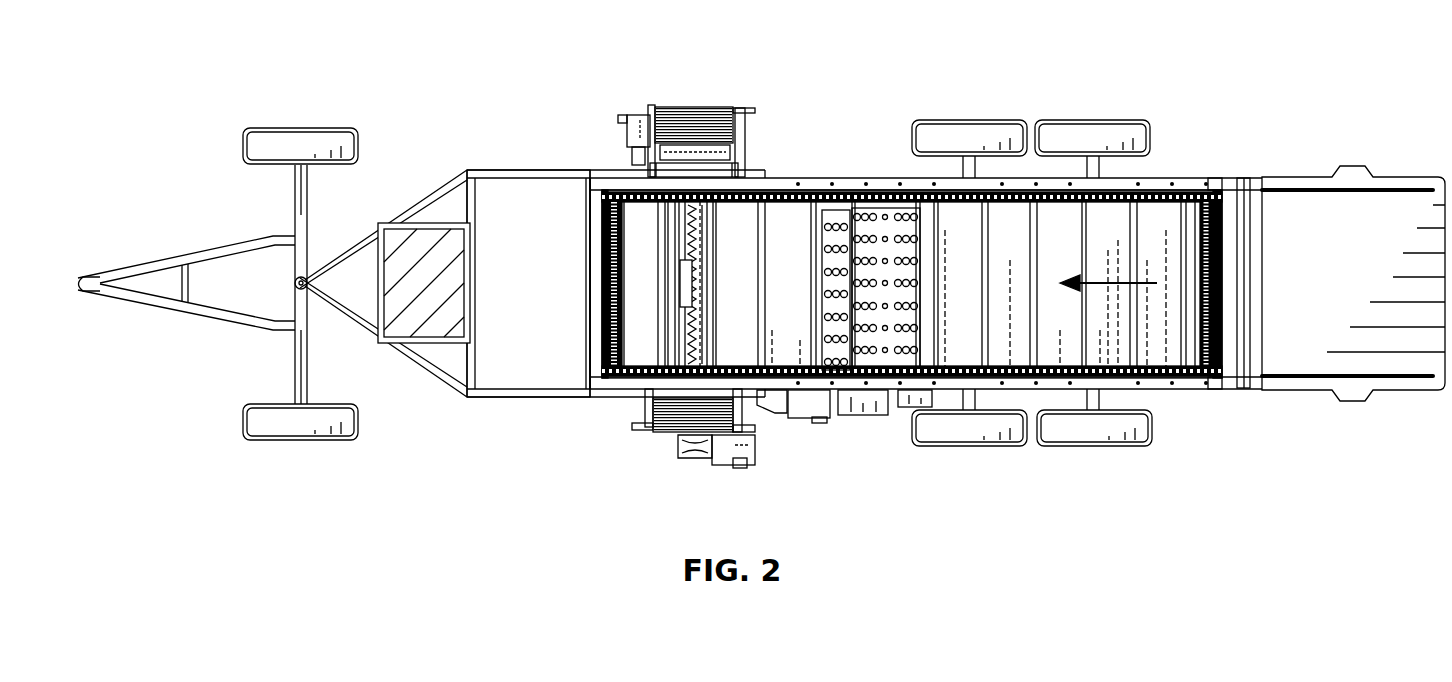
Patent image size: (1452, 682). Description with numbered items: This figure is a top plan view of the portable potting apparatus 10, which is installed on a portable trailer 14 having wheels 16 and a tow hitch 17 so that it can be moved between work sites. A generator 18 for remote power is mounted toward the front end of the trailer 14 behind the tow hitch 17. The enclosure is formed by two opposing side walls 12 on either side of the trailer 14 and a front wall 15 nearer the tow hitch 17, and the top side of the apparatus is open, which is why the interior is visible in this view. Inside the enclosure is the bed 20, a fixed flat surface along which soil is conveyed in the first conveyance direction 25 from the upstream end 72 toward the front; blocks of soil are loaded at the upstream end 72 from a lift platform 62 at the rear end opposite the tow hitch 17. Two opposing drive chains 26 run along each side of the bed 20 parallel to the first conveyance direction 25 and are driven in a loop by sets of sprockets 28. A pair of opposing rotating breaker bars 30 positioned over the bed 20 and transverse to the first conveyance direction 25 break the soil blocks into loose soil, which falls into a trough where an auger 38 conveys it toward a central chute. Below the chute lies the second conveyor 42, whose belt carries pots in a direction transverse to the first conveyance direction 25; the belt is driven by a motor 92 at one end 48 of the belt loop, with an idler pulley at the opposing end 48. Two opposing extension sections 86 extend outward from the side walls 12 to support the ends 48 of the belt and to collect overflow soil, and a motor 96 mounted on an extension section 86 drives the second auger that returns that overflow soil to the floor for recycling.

The potting apparatus 10 is at (186, 64).
The side walls 12 is at (786, 176).
The portable trailer 14 is at (525, 396).
The front wall 15 is at (586, 290).
The wheels 16 is at (304, 127).
The tow hitch 17 is at (136, 304).
The generator 18 is at (418, 248).
The bed 20 is at (1157, 213).
The first conveyance direction 25 is at (1102, 281).
The drive chains 26 is at (1175, 367).
The sprockets 28 is at (623, 205).
The breaker bars 30 is at (840, 214).
The auger 38 is at (684, 342).
The second conveyor 42 is at (690, 157).
The end of the belt 48 is at (709, 148).
The lift platform 62 is at (1378, 220).
The upstream end 72 is at (1224, 240).
The extension sections 86 is at (748, 135).
The motor 92 is at (632, 133).
The motor 96 is at (726, 452).